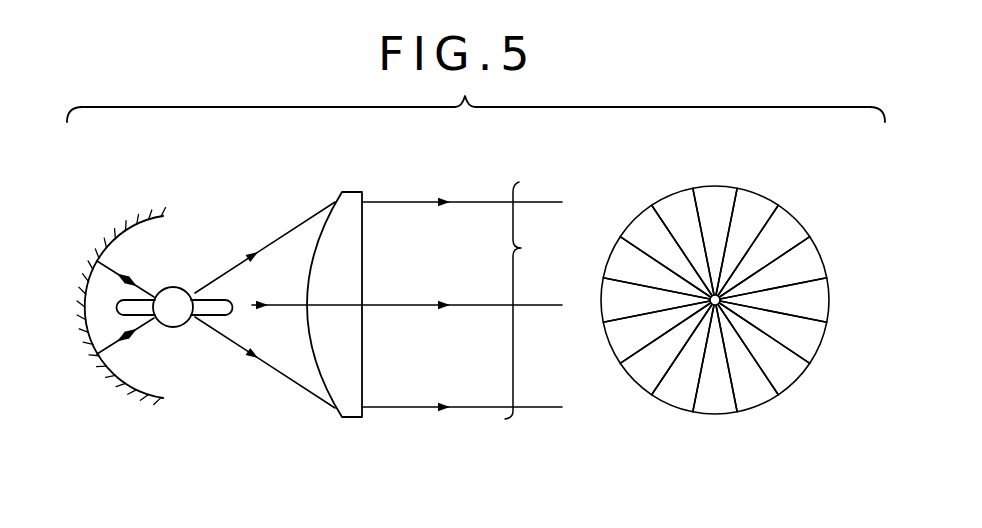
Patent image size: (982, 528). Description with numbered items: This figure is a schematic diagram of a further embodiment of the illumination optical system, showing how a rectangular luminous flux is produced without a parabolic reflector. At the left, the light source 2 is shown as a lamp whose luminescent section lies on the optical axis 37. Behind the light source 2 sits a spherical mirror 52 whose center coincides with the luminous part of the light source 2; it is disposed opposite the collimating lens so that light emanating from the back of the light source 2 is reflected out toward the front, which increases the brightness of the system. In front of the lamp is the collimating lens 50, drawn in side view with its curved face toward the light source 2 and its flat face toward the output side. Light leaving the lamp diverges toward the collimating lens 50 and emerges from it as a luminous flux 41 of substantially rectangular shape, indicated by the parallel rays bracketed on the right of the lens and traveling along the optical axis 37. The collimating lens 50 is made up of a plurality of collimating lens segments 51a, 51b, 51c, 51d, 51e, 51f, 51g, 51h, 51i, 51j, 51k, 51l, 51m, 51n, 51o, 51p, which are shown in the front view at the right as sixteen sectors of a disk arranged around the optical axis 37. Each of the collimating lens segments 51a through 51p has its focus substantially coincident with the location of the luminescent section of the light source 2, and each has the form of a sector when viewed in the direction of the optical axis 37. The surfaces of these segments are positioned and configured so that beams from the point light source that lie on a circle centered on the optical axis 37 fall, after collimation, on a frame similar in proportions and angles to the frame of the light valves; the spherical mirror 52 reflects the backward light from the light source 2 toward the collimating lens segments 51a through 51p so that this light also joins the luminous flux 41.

The light source 2 is at (177, 327).
The spherical mirror 52 is at (118, 228).
The collimating lens 50 is at (363, 418).
The optical axis 37 is at (543, 305).
The luminous flux 41 is at (462, 300).
The collimating lens segment 51a is at (718, 192).
The collimating lens segment 51b is at (756, 204).
The collimating lens segment 51c is at (790, 226).
The collimating lens segment 51d is at (811, 258).
The collimating lens segment 51e is at (818, 298).
The collimating lens segment 51f is at (812, 336).
The collimating lens segment 51g is at (792, 366).
The collimating lens segment 51h is at (758, 392).
The collimating lens segment 51i is at (728, 405).
The collimating lens segment 51j is at (680, 400).
The collimating lens segment 51k is at (645, 377).
The collimating lens segment 51l is at (618, 346).
The collimating lens segment 51m is at (610, 300).
The collimating lens segment 51n is at (616, 252).
The collimating lens segment 51o is at (645, 220).
The collimating lens segment 51p is at (677, 200).